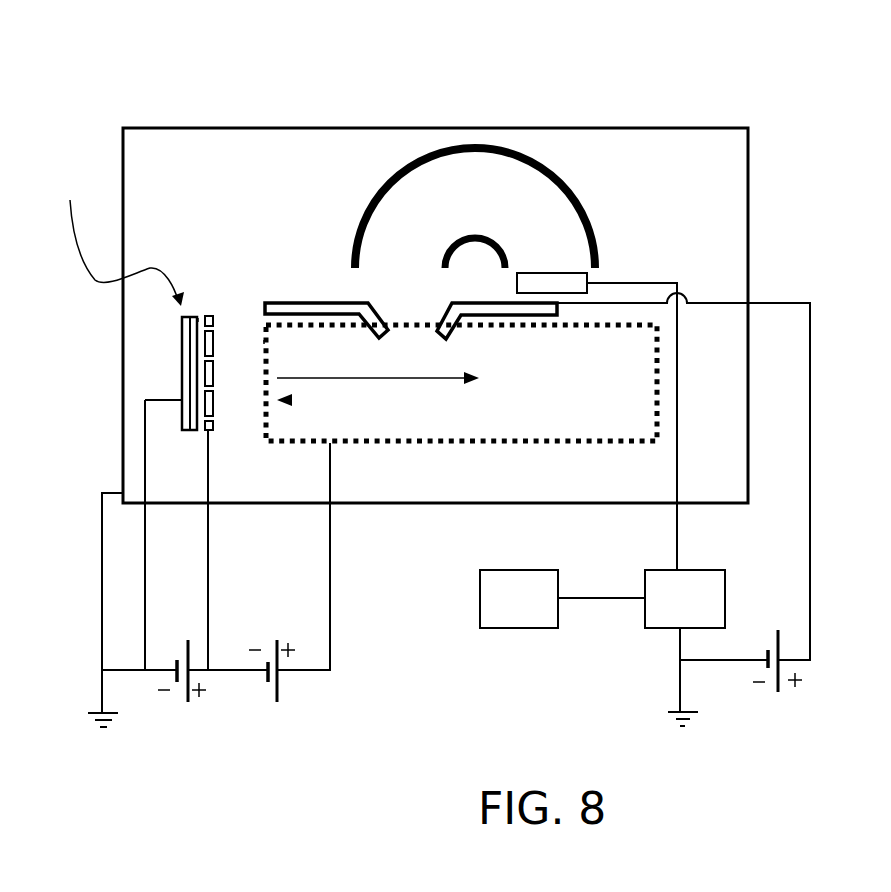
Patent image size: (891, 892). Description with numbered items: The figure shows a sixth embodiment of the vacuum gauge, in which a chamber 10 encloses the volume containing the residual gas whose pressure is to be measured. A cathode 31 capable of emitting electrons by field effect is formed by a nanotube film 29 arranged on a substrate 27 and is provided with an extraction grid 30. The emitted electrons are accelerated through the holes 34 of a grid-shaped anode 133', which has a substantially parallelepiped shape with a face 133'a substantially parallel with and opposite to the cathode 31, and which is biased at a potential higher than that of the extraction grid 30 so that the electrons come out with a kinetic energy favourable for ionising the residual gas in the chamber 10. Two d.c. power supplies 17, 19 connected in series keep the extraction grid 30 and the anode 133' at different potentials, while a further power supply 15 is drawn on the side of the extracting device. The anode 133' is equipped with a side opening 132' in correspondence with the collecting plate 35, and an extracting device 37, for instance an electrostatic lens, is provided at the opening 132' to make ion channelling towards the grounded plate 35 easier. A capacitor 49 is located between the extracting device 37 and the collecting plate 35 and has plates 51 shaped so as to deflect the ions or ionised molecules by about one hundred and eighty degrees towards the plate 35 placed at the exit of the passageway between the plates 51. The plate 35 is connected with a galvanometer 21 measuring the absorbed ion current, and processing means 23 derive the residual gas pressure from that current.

The chamber 10 is at (748, 228).
The voltage source 15 is at (787, 698).
The d.c. power supply 17 is at (194, 720).
The d.c. power supply 19 is at (300, 690).
The galvanometer 21 is at (700, 614).
The processing means 23 is at (532, 614).
The substrate 27 is at (182, 360).
The nanotube film 29 is at (200, 318).
The extraction grid 30 is at (222, 318).
The cathode 31 is at (117, 239).
The holes 34 is at (264, 340).
The collecting plate 35 is at (530, 272).
The extracting device 37 is at (533, 322).
The capacitor 49 is at (486, 202).
The capacitor plates 51 is at (536, 162).
The side opening 132' is at (352, 322).
The grid-shaped anode 133' is at (461, 383).
The face 133'a is at (349, 554).